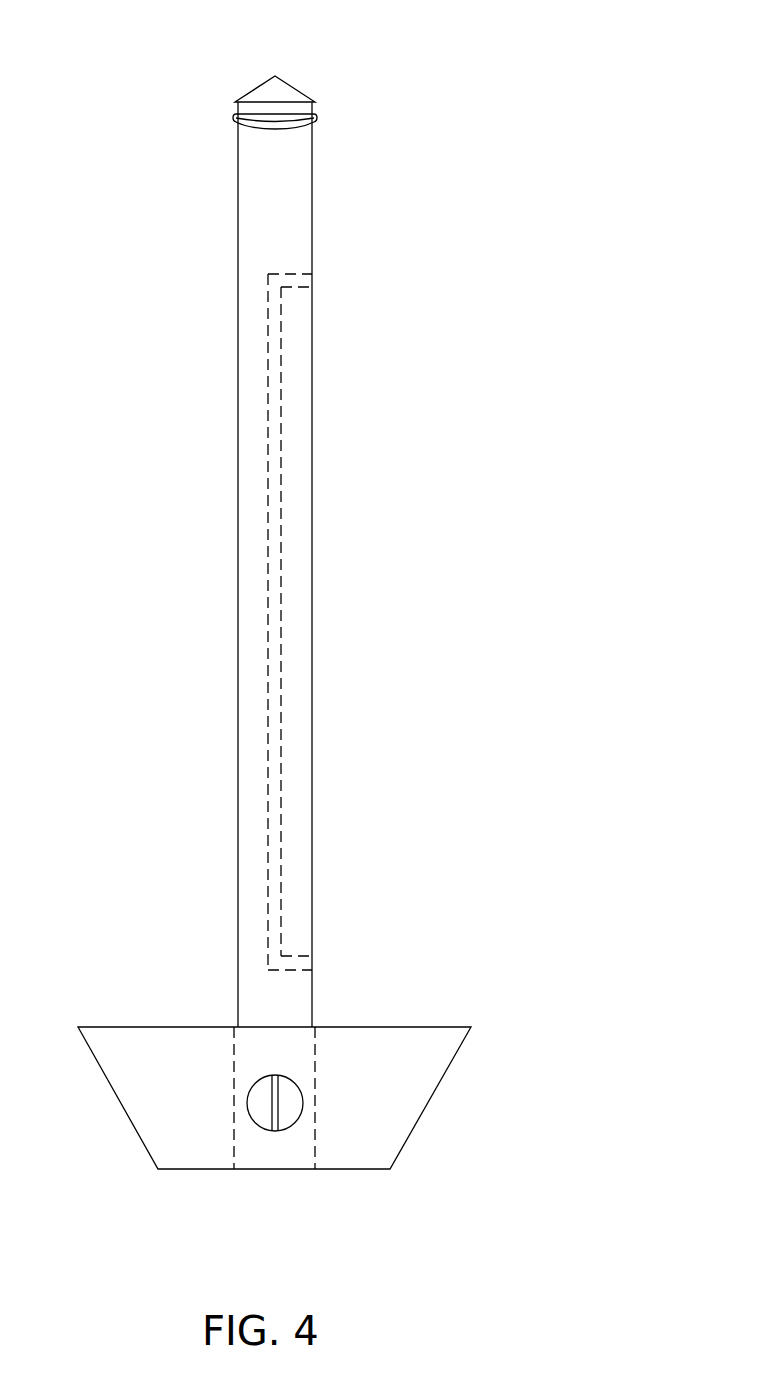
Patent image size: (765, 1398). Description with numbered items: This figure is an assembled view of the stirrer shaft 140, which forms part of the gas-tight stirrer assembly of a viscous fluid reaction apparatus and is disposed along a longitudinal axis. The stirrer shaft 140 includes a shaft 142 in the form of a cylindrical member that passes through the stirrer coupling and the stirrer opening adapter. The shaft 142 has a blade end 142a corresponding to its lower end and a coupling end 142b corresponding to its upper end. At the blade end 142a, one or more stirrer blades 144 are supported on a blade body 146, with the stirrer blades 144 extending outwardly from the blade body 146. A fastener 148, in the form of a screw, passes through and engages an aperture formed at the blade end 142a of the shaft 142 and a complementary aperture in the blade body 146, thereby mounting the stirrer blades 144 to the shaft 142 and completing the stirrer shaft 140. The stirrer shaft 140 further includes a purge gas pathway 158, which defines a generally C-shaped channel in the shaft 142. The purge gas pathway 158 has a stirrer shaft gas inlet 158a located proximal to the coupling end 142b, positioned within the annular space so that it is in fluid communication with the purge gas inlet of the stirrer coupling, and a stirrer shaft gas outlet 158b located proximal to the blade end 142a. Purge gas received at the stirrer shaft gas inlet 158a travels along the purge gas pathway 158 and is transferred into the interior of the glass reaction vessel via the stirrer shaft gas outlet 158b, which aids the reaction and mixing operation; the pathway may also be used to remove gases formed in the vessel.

The stirrer shaft 140 is at (367, 90).
The shaft 142 is at (238, 543).
The blade end 142a is at (258, 1169).
The coupling end 142b is at (262, 86).
The stirrer blades 144 is at (443, 1026).
The blade body 146 is at (257, 1040).
The fastener 148 is at (289, 1105).
The purge gas pathway 158 is at (287, 565).
The stirrer shaft gas inlet 158a is at (318, 280).
The stirrer shaft gas outlet 158b is at (318, 963).